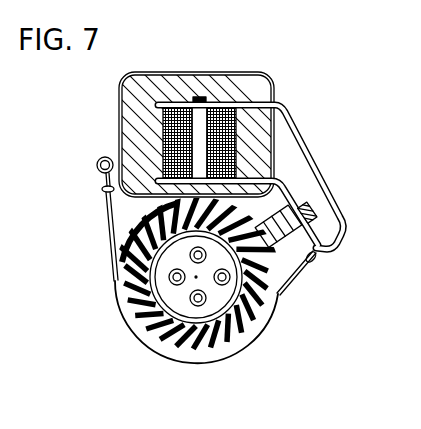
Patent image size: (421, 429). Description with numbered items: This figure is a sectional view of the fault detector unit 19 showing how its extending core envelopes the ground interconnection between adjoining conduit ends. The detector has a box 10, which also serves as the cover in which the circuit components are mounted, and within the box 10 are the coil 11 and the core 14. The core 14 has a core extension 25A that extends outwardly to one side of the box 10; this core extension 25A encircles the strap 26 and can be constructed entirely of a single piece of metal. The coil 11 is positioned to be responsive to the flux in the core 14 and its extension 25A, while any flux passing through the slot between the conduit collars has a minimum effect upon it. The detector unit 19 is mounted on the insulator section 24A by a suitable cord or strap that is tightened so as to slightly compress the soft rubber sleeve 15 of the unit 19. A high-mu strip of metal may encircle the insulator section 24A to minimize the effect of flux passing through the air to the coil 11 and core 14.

The box 10 is at (274, 94).
The coil 11 is at (163, 147).
The core 14 is at (163, 124).
The soft rubber sleeve 15 is at (280, 289).
The detector unit 19 is at (294, 69).
The insulator section 24A is at (207, 276).
The core extension 25A is at (325, 185).
The strap 26 is at (309, 217).